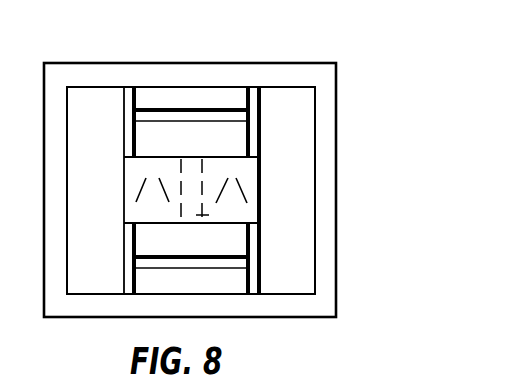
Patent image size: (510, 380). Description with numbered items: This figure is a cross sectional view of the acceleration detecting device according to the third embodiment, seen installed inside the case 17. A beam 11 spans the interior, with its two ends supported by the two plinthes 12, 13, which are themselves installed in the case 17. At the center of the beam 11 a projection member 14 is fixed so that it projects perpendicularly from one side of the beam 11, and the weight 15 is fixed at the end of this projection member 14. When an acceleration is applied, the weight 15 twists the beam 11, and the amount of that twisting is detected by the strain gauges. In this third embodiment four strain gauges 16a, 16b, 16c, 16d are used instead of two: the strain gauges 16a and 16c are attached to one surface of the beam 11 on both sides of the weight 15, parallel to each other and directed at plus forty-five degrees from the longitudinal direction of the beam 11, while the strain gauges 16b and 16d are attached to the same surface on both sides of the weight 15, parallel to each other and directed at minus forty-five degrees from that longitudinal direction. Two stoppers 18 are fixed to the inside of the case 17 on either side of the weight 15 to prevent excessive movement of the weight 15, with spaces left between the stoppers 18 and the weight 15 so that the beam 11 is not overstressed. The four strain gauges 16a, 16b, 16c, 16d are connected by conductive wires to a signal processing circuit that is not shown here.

The beam 11 is at (135, 163).
The plinth 12 is at (95, 92).
The plinth 13 is at (293, 92).
The projection member 14 is at (214, 214).
The weight 15 is at (212, 128).
The strain gauge 16a is at (140, 190).
The strain gauge 16b is at (160, 203).
The strain gauge 16c is at (220, 186).
The strain gauge 16d is at (240, 187).
The case 17 is at (300, 303).
The stopper 18 is at (175, 90).